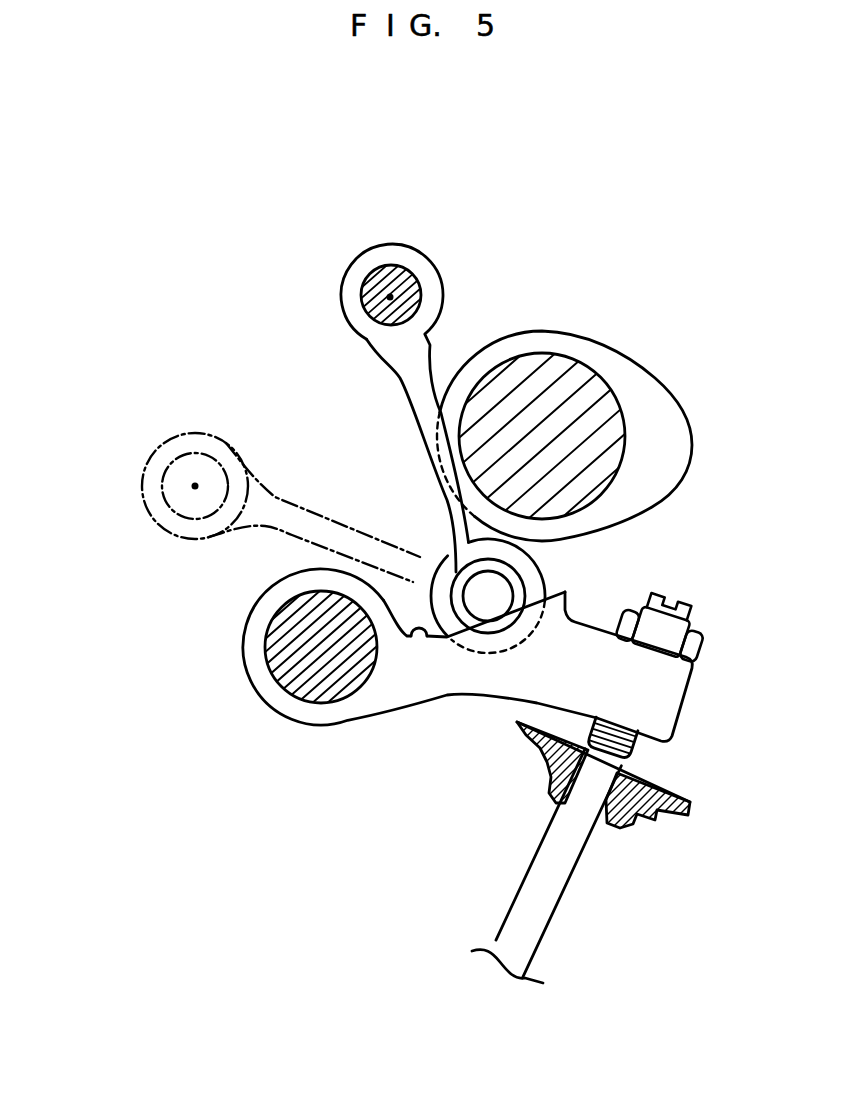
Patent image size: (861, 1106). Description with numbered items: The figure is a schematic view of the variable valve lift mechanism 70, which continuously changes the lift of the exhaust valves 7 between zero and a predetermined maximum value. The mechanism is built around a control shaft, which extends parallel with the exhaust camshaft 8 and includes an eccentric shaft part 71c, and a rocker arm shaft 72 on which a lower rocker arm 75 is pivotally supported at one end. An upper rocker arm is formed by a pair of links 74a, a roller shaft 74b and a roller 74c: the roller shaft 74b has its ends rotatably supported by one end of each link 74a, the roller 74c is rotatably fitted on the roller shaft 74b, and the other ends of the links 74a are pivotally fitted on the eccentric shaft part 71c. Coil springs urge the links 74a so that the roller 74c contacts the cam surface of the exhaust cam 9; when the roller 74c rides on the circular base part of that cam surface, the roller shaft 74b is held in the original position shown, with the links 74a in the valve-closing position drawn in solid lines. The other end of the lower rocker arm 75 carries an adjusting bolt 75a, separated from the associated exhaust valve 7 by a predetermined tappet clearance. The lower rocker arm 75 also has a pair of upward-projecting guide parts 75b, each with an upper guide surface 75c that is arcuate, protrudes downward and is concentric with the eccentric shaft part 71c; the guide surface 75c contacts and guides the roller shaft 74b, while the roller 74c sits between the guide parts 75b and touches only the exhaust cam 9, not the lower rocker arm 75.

The variable valve lift mechanism 70 is at (199, 319).
The exhaust valve 7 is at (560, 907).
The exhaust camshaft 8 is at (546, 363).
The exhaust cam 9 is at (638, 367).
The eccentric shaft part 71c is at (405, 283).
The rocker arm shaft 72 is at (319, 685).
The link 74a is at (397, 243).
The roller shaft 74b is at (481, 591).
The roller 74c is at (540, 563).
The lower rocker arm 75 is at (267, 702).
The adjusting bolt 75a is at (694, 652).
The guide part 75b is at (567, 602).
The guide surface 75c is at (414, 640).